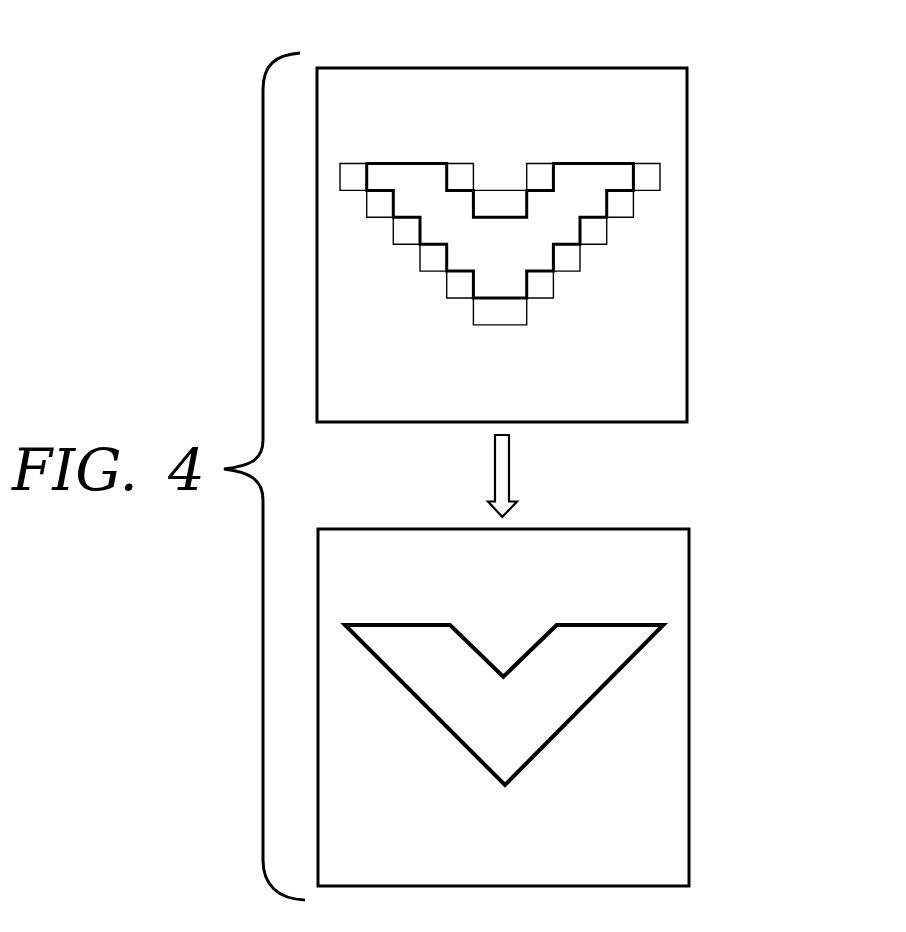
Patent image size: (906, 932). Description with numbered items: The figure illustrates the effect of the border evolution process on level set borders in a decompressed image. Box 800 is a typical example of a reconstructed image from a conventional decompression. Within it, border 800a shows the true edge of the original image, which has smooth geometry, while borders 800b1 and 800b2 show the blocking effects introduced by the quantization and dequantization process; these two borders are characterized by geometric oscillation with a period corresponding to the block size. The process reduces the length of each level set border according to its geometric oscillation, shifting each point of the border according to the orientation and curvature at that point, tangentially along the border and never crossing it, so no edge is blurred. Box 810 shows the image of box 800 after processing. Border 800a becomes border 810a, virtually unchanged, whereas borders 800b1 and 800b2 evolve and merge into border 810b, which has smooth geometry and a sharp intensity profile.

The box 800 is at (359, 67).
The border 800a is at (586, 162).
The border 800b1 is at (555, 260).
The border 800b2 is at (555, 285).
The box 810 is at (362, 528).
The border 810a is at (617, 623).
The border 810b is at (573, 715).